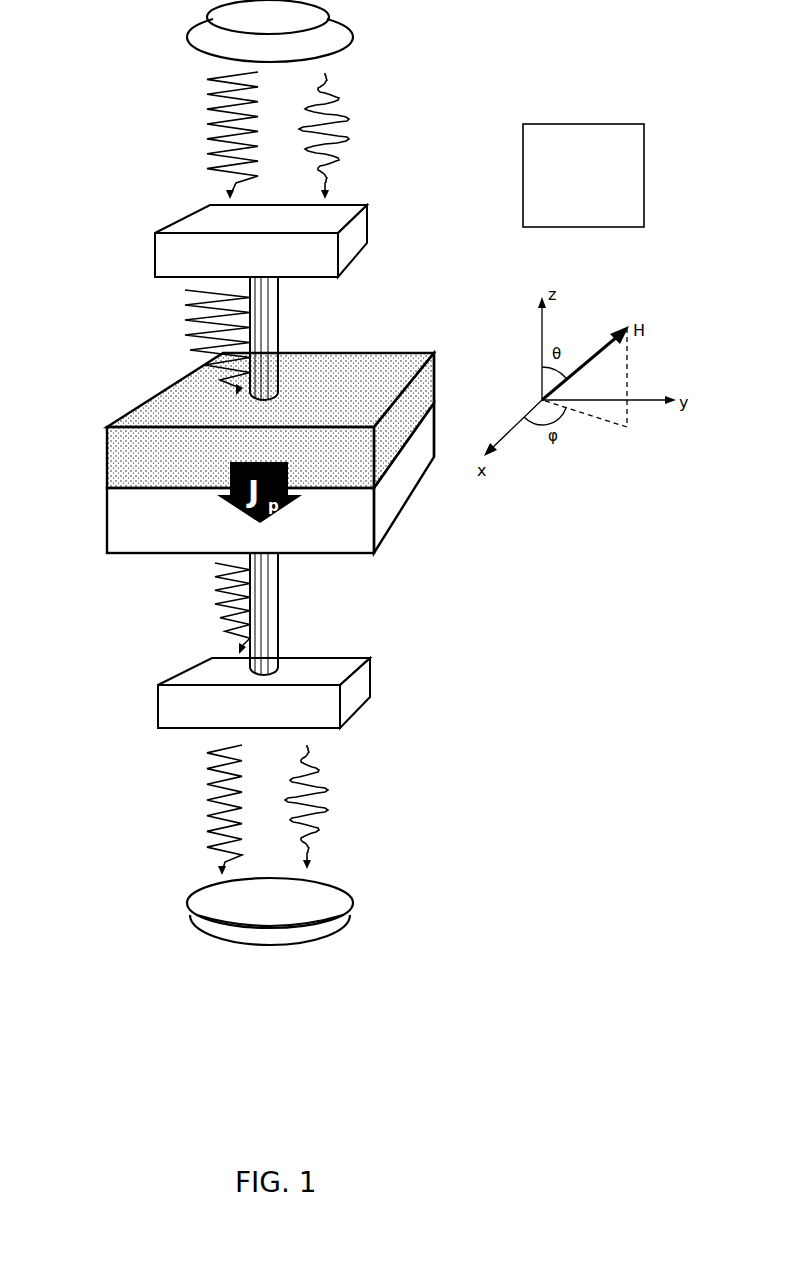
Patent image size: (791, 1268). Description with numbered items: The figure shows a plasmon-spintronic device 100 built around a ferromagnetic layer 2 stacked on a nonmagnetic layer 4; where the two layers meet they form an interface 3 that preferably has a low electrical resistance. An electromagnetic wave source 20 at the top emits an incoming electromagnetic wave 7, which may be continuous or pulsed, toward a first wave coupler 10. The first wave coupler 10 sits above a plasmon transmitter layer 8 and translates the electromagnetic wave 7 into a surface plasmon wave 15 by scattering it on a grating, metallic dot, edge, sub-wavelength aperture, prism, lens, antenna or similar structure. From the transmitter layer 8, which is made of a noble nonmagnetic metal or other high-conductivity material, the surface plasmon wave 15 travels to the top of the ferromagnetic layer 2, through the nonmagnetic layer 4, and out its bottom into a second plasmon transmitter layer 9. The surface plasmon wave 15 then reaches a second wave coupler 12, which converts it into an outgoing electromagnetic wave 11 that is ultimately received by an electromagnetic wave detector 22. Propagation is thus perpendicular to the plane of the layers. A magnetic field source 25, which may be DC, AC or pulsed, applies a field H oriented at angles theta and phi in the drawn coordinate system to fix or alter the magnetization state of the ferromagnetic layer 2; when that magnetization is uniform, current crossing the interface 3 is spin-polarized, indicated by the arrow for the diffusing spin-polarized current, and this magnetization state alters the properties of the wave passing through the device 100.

The electromagnetic wave source 20 is at (233, 18).
The electromagnetic wave 7 is at (374, 104).
The first wave coupler 10 is at (207, 254).
The plasmon transmitter layer 8 is at (280, 325).
The surface plasmon wave 15 is at (217, 336).
The ferromagnetic layer 2 is at (190, 477).
The nonmagnetic layer 4 is at (190, 539).
The interface 3 is at (392, 465).
The plasmon-spintronic device 100 is at (464, 570).
The second plasmon transmitter layer 9 is at (278, 621).
The second wave coupler 12 is at (207, 716).
The outgoing electromagnetic wave 11 is at (336, 797).
The electromagnetic wave detector 22 is at (222, 910).
The magnetic field source 25 is at (583, 175).